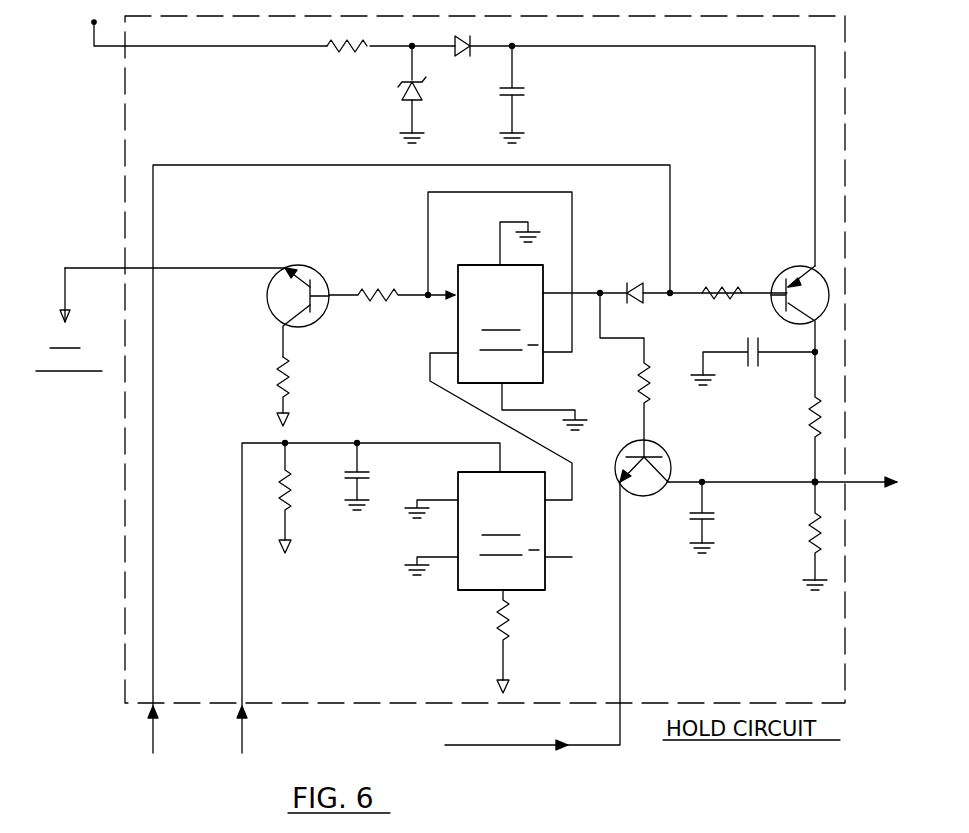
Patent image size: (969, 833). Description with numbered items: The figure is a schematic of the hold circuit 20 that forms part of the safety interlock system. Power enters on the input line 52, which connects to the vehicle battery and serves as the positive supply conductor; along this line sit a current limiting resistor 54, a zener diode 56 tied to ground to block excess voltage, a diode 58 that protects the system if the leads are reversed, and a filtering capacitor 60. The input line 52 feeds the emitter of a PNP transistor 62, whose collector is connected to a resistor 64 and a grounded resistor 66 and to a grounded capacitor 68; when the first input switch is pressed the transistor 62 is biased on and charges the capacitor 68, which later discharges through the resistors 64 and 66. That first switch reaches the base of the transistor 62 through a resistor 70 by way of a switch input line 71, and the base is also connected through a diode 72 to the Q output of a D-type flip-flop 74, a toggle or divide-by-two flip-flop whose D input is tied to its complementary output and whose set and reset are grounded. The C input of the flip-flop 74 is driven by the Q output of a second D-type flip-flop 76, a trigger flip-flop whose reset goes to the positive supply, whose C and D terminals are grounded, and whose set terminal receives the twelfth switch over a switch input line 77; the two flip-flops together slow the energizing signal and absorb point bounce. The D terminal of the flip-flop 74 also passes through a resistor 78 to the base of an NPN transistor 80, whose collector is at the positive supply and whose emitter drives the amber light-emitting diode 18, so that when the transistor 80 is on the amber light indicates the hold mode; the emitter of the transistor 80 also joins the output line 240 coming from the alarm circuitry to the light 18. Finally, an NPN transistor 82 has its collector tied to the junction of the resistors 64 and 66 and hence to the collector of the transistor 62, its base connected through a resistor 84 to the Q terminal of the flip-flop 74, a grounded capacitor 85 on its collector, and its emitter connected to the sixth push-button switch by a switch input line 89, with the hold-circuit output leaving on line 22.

The hold circuit 20 is at (132, 76).
The input line 52 is at (216, 50).
The current limiting resistor 54 is at (342, 54).
The zener diode 56 is at (404, 94).
The diode 58 is at (465, 58).
The filtering capacitor 60 is at (522, 90).
The PNP transistor 62 is at (800, 266).
The resistor 64 is at (814, 424).
The resistor 66 is at (814, 556).
The capacitor 68 is at (756, 368).
The resistor 70 is at (730, 290).
The switch input line 71 is at (153, 573).
The diode 72 is at (638, 285).
The D-type flip-flop 74 is at (470, 265).
The second D-type flip-flop 76 is at (476, 590).
The switch input line 77 is at (242, 592).
The resistor 78 is at (366, 290).
The NPN transistor 80 is at (300, 264).
The NPN transistor 82 is at (650, 498).
The resistor 84 is at (642, 386).
The capacitor 85 is at (714, 514).
The switch input line 89 is at (500, 746).
The output line 240 is at (100, 266).
The light-emitting diode 18 is at (88, 398).
The output line 22 is at (866, 480).